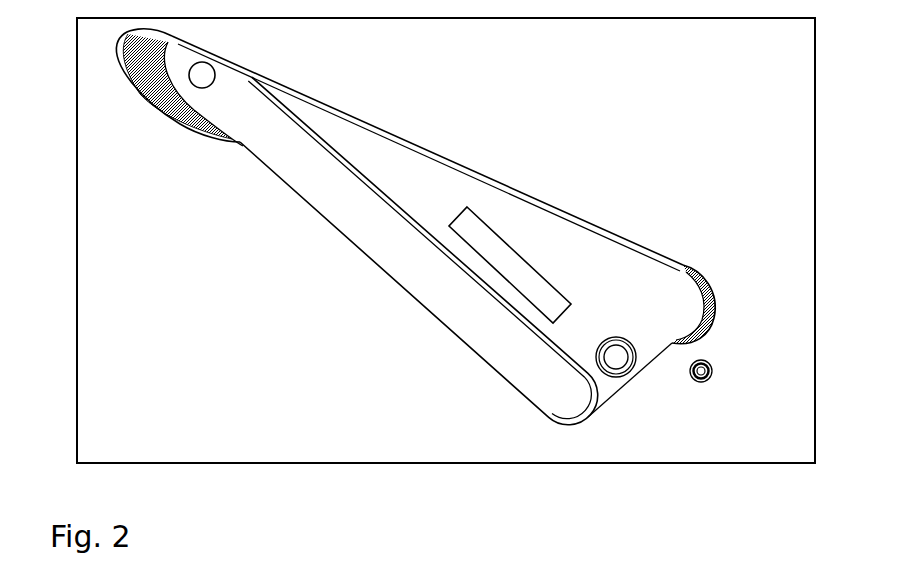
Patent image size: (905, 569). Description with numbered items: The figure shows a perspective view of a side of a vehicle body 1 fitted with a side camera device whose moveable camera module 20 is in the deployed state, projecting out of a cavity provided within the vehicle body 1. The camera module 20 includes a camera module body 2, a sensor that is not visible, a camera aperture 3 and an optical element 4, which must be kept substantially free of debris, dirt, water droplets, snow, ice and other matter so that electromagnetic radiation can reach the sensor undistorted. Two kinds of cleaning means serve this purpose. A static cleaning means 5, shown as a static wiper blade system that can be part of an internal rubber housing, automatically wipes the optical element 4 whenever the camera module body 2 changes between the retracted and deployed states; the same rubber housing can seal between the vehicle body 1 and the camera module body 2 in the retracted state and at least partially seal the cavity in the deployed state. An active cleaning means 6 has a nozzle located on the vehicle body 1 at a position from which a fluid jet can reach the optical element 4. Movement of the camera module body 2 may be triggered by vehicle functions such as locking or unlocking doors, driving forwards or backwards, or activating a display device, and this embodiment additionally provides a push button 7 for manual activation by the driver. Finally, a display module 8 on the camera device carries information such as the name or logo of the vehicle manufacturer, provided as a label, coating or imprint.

The vehicle body 1 is at (452, 141).
The camera module body 2 is at (255, 101).
The camera aperture 3 is at (642, 383).
The optical element 4 is at (618, 362).
The static cleaning means 5 is at (697, 329).
The active cleaning means 6 is at (714, 382).
The push button 7 is at (210, 75).
The display module 8 is at (523, 279).
The camera module 20 is at (385, 318).